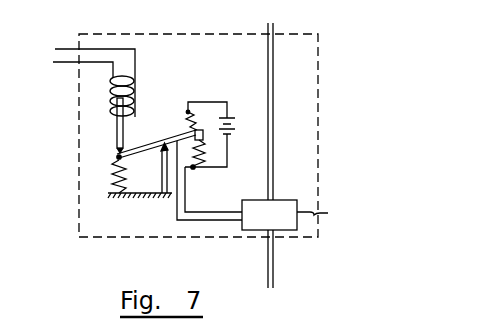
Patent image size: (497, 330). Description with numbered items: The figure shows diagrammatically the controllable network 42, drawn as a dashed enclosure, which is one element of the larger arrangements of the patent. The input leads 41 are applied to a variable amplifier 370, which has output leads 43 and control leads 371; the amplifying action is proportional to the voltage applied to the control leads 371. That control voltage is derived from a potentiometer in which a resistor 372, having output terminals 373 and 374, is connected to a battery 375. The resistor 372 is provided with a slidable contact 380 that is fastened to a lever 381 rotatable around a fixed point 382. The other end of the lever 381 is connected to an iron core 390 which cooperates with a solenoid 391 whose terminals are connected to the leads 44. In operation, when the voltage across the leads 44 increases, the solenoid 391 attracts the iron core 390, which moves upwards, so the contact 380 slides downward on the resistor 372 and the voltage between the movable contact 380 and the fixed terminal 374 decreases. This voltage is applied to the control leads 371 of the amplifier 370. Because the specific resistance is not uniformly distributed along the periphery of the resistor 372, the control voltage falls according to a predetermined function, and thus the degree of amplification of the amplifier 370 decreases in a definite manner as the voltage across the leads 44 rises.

The input leads 41 is at (275, 256).
The controllable network 42 is at (318, 87).
The output leads 43 is at (273, 53).
The leads 44 is at (61, 49).
The variable amplifier 370 is at (322, 215).
The control leads 371 is at (207, 213).
The resistor 372 is at (197, 129).
The output terminal 373 is at (188, 112).
The output terminal 374 is at (193, 167).
The battery 375 is at (235, 124).
The slidable contact 380 is at (203, 136).
The lever 381 is at (138, 153).
The fixed point 382 is at (163, 143).
The iron core 390 is at (116, 135).
The solenoid 391 is at (108, 103).